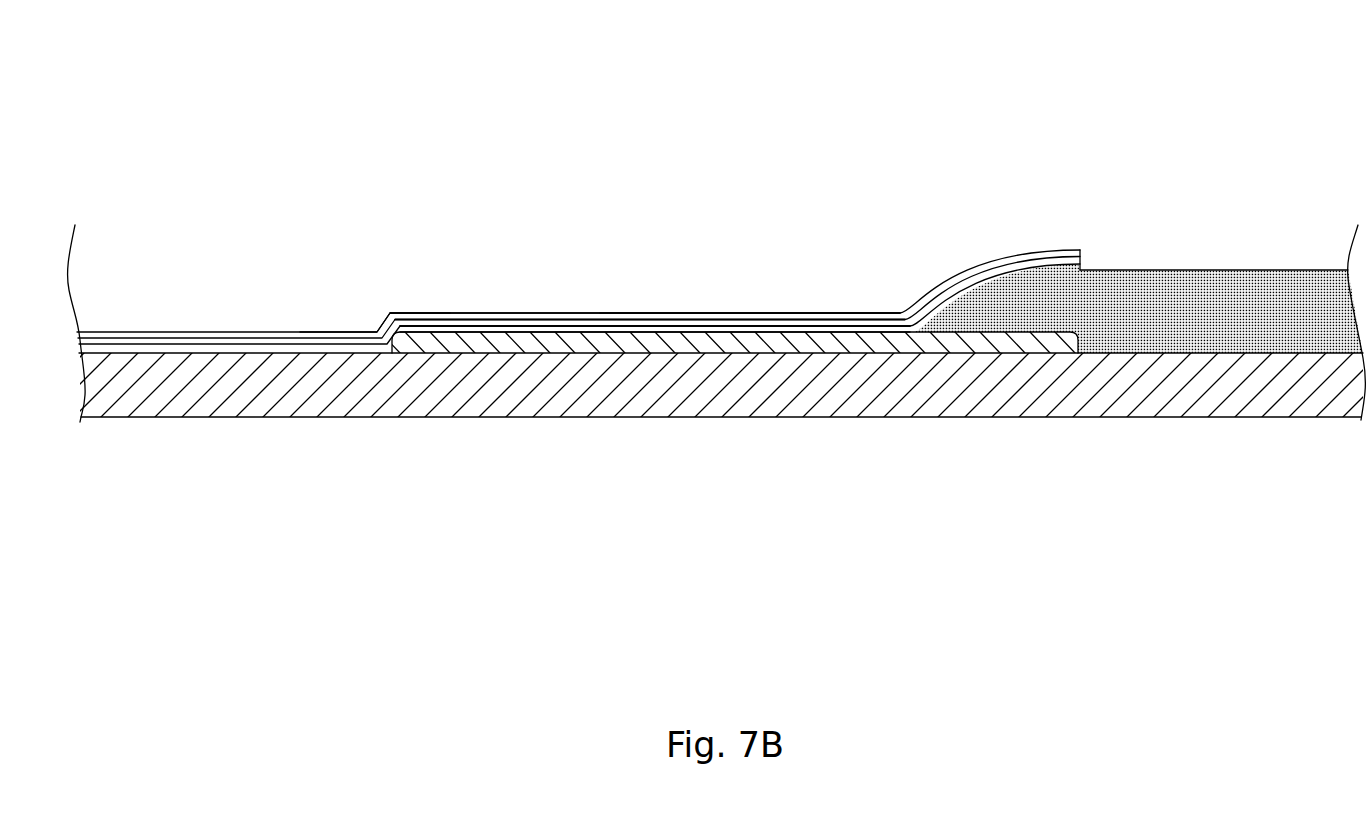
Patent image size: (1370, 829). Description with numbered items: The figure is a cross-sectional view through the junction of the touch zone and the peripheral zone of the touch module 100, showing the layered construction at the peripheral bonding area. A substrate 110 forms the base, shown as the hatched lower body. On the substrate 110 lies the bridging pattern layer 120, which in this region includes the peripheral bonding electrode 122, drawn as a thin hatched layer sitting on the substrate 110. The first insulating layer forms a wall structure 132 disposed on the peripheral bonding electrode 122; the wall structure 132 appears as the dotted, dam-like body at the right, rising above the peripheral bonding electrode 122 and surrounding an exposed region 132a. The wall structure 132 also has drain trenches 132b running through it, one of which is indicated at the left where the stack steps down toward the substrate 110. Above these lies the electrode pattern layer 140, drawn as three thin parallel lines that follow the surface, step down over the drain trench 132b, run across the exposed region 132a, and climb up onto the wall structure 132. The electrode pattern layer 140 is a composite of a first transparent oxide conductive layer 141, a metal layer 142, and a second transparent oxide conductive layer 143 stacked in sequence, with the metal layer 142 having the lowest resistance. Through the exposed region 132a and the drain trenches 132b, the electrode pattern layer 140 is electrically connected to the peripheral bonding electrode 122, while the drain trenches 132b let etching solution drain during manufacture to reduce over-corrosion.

The touch module 100 is at (1290, 78).
The substrate 110 is at (647, 393).
The bridging pattern layer 120 is at (729, 397).
The peripheral bonding electrode 122 is at (500, 345).
The wall structure 132 is at (1158, 295).
The exposed region 132a is at (712, 292).
The drain trench 132b is at (392, 282).
The electrode pattern layer 140 is at (448, 223).
The first transparent oxide conductive layer 141 is at (482, 332).
The metal layer 142 is at (532, 322).
The second transparent oxide conductive layer 143 is at (585, 315).